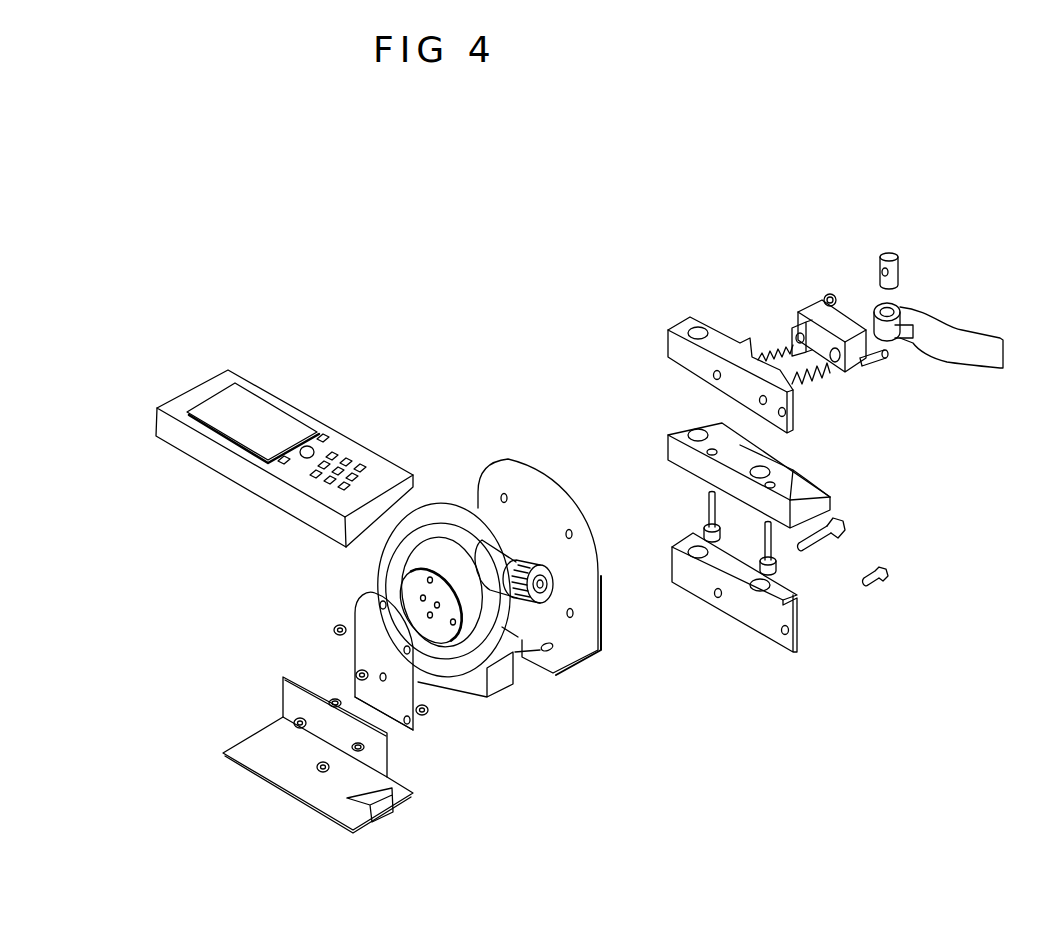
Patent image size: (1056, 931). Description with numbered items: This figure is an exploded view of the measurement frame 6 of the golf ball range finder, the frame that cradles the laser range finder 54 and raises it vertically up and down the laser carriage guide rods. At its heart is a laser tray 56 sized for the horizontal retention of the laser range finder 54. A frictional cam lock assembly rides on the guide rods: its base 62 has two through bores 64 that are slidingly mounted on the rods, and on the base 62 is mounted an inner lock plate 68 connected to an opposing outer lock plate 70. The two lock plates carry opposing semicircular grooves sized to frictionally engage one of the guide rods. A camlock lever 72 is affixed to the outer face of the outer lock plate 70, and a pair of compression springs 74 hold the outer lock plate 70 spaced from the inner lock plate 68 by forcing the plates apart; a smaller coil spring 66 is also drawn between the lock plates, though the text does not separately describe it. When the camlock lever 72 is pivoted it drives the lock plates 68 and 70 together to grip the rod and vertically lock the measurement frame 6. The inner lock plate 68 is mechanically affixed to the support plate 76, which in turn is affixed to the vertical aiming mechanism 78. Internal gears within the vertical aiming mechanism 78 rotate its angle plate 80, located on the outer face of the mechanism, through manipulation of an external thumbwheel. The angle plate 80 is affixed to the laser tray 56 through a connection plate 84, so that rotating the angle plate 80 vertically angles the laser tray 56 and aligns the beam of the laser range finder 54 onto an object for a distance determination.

The measurement frame 6 is at (392, 230).
The laser range finder 54 is at (200, 387).
The laser tray 56 is at (292, 783).
The base 62 is at (822, 498).
The through bores 64 is at (693, 433).
The spring 66 is at (787, 332).
The inner lock plate 68 is at (688, 320).
The outer lock plate 70 is at (840, 327).
The camlock lever 72 is at (947, 330).
The compression springs 74 is at (818, 375).
The support plate 76 is at (593, 625).
The vertical aiming mechanism 78 is at (502, 685).
The angle plate 80 is at (412, 577).
The connection plate 84 is at (415, 677).